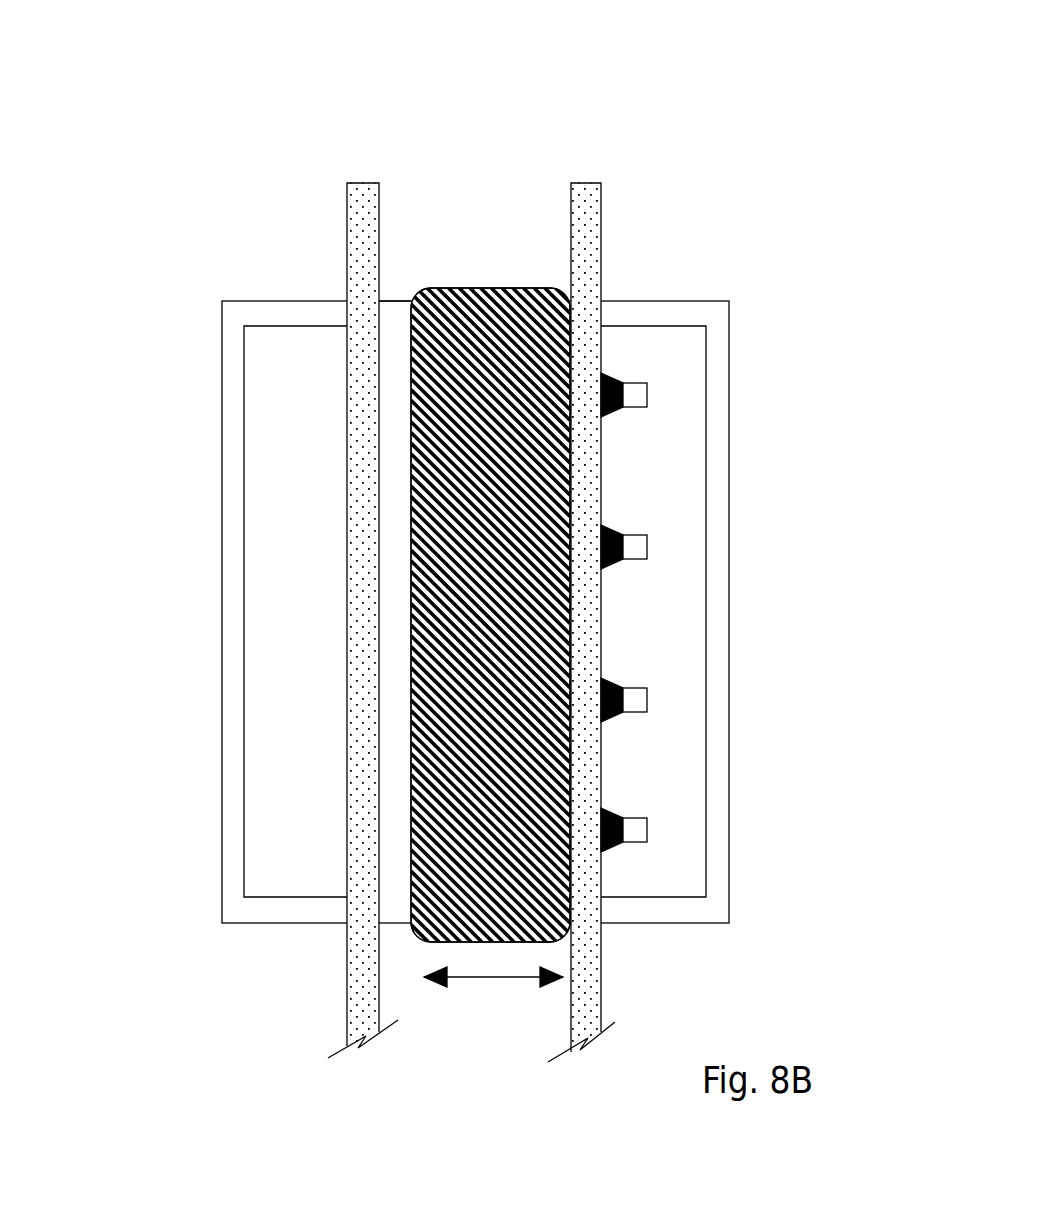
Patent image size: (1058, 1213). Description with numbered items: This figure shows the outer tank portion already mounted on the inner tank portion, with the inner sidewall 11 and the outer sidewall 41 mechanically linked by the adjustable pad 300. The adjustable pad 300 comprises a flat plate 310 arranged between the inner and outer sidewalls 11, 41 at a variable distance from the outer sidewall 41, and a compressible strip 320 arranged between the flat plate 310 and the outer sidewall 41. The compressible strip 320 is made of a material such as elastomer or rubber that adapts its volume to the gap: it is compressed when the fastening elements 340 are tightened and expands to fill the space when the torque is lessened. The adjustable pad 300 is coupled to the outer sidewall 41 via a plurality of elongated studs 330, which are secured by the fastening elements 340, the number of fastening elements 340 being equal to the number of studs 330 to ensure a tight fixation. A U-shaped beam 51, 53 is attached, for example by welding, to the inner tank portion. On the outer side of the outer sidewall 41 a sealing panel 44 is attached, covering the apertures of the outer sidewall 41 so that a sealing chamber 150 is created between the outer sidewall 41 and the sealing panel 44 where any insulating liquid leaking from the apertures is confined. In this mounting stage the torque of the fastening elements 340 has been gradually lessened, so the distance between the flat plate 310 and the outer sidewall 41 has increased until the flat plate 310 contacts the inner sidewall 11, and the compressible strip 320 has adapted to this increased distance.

The adjustable pad 300 is at (463, 95).
The inner sidewall 11 is at (363, 192).
The outer sidewall 41 is at (590, 197).
The sealing panel 44 is at (717, 318).
The U-shaped beam 51 is at (373, 611).
The U-shaped beam 53 is at (237, 502).
The sealing chamber 150 is at (690, 462).
The flat plate 310 is at (404, 313).
The compressible strip 320 is at (508, 290).
The elongated studs 330 is at (633, 697).
The fastening elements 340 is at (610, 373).